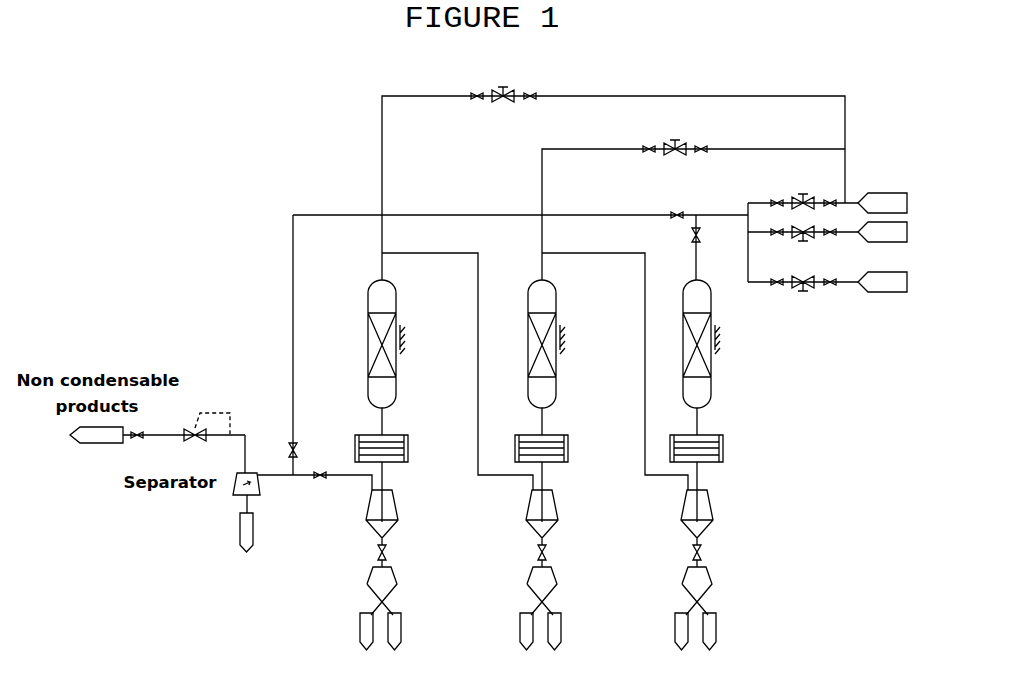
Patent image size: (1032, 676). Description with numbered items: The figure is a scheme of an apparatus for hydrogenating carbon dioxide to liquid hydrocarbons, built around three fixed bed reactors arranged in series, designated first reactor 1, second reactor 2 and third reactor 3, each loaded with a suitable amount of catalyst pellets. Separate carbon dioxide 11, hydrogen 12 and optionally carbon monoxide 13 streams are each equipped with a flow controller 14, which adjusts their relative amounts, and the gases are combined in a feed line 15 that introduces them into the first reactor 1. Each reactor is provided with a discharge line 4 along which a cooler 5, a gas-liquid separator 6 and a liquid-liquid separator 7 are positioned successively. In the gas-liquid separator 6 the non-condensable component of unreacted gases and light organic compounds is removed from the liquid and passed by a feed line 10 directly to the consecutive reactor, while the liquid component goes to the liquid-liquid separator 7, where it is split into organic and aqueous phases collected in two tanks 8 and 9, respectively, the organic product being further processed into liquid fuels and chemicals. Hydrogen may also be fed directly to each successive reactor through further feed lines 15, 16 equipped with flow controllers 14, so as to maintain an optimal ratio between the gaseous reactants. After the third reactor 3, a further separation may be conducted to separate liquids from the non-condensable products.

The first reactor 1 is at (707, 344).
The second reactor 2 is at (553, 344).
The third reactor 3 is at (393, 344).
The discharge line 4 is at (549, 465).
The cooler 5 is at (551, 448).
The gas-liquid separator 6 is at (552, 528).
The liquid-liquid separator 7 is at (550, 591).
The organic phase tank 8 is at (452, 581).
The aqueous phase tank 9 is at (566, 631).
The feed line 10 is at (535, 362).
The carbon dioxide stream 11 is at (893, 232).
The hydrogen stream 12 is at (893, 203).
The carbon monoxide stream 13 is at (893, 282).
The flow controller 14 is at (653, 176).
The feed line 15 is at (520, 237).
The feed line 16 is at (613, 178).